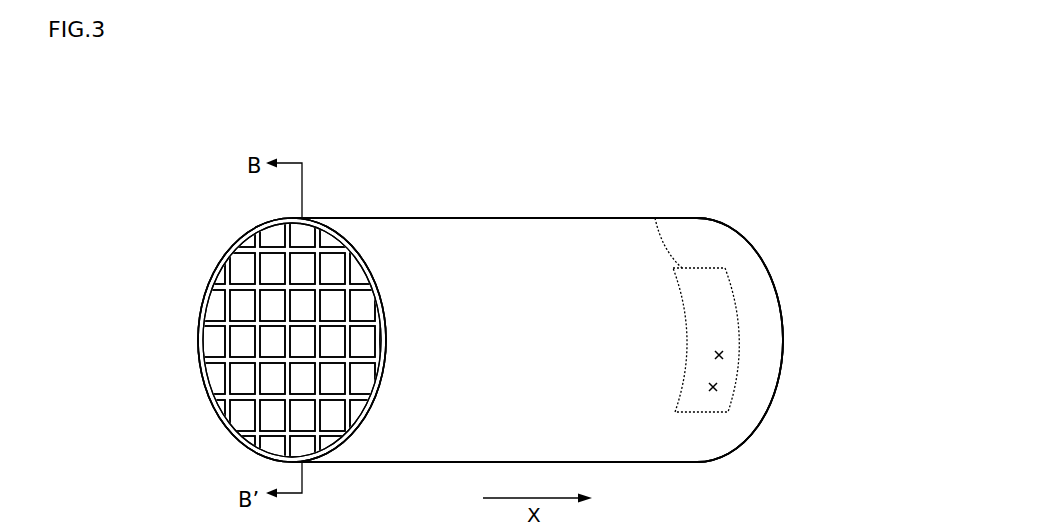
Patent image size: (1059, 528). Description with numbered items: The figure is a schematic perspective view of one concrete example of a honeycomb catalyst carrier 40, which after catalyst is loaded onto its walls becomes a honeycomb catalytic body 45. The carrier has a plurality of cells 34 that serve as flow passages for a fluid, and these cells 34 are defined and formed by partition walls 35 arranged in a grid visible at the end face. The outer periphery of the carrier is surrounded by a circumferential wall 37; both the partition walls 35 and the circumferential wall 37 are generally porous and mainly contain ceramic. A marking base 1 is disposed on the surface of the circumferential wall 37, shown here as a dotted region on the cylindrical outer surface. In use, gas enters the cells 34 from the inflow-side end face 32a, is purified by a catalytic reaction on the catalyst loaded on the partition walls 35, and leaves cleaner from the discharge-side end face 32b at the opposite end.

The honeycomb catalyst carrier 40 is at (689, 116).
The honeycomb catalytic body 45 is at (490, 340).
The inflow-side end face 32a is at (257, 224).
The discharge-side end face 32b is at (698, 218).
The cell 34 is at (243, 270).
The partition wall 35 is at (238, 288).
The circumferential wall 37 is at (575, 250).
The marking base 1 is at (655, 218).